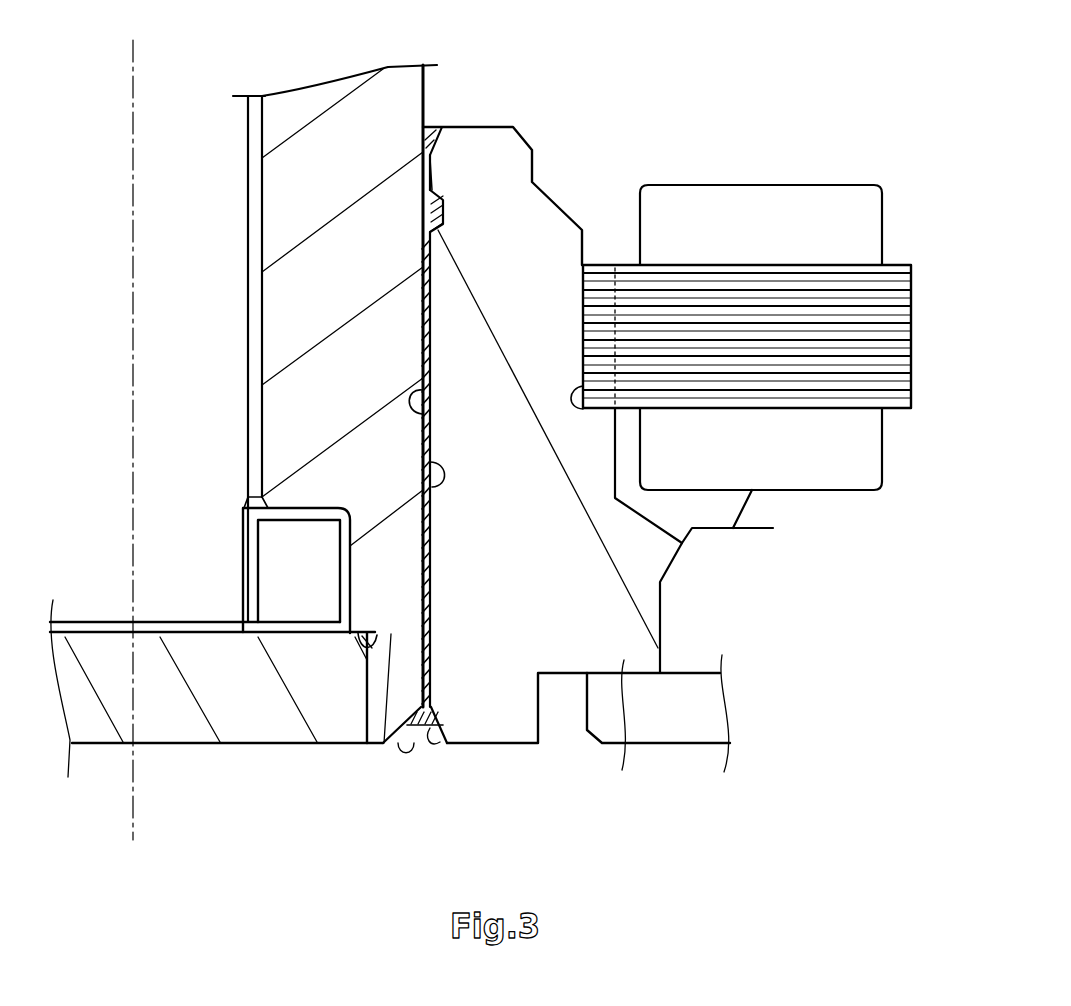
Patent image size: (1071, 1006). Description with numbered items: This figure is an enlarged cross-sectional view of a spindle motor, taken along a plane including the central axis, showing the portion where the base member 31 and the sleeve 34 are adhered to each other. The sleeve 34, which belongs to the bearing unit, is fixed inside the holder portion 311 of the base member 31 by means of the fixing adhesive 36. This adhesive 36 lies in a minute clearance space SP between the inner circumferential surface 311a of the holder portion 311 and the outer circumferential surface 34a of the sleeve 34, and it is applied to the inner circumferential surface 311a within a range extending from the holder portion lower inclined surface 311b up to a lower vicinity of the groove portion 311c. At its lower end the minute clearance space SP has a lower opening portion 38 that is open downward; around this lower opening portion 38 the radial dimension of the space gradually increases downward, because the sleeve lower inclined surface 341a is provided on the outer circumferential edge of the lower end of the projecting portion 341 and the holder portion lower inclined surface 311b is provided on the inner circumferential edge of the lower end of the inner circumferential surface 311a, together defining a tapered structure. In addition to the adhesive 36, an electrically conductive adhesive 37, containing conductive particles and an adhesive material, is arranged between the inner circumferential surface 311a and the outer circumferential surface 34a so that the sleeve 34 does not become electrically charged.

The sleeve 34 is at (368, 95).
The minute clearance space SP is at (429, 150).
The electrically conductive adhesive 37 is at (432, 192).
The holder portion 311 is at (548, 217).
The groove portion 311c is at (444, 217).
The inner circumferential surface 311a is at (418, 402).
The outer circumferential surface 34a is at (440, 480).
The fixing adhesive 36 is at (432, 505).
The projecting portion 341 is at (373, 730).
The sleeve lower inclined surface 341a is at (392, 632).
The holder portion lower inclined surface 311b is at (443, 727).
The lower opening portion 38 is at (440, 750).
The base member 31 is at (679, 495).